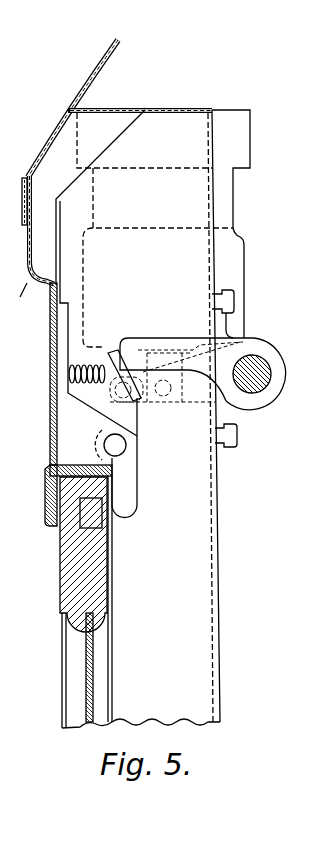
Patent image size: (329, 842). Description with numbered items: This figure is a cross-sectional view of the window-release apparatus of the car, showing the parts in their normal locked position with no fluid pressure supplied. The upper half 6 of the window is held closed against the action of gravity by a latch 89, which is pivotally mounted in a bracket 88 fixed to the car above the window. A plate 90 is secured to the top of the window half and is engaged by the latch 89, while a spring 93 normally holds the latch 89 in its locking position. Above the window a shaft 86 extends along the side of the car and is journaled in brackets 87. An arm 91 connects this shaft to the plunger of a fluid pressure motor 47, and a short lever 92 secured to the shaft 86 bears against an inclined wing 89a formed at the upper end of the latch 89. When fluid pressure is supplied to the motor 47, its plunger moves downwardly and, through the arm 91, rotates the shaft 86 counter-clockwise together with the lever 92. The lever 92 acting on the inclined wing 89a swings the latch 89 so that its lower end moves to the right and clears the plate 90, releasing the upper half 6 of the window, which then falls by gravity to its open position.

The upper half of the window 6 is at (109, 573).
The fluid pressure motor 47 is at (244, 262).
The shaft 86 is at (270, 375).
The brackets 87 is at (233, 409).
The bracket 88 is at (98, 330).
The latch 89 is at (139, 487).
The inclined wing 89a is at (110, 352).
The plate 90 is at (108, 540).
The arm 91 is at (196, 405).
The short lever 92 is at (185, 333).
The spring 93 is at (70, 366).